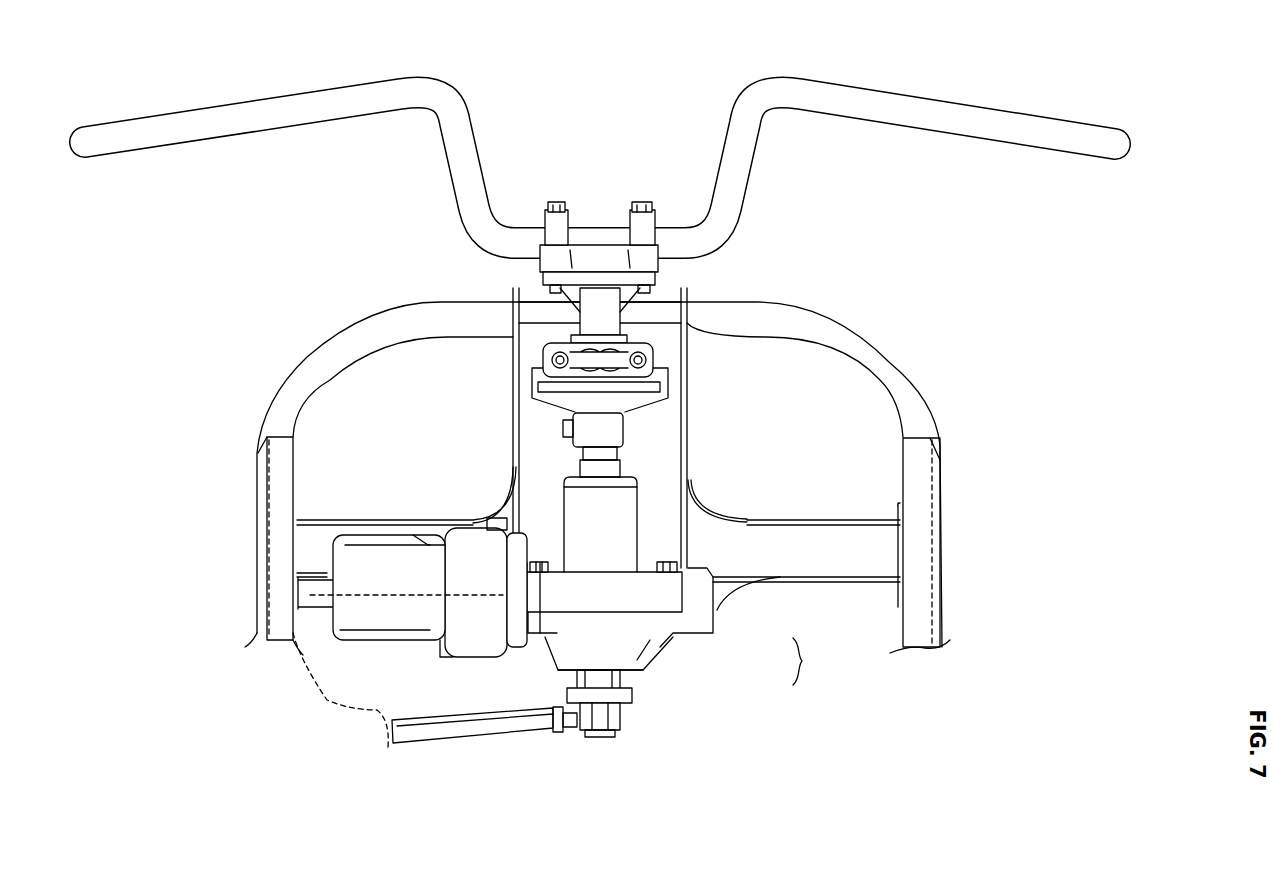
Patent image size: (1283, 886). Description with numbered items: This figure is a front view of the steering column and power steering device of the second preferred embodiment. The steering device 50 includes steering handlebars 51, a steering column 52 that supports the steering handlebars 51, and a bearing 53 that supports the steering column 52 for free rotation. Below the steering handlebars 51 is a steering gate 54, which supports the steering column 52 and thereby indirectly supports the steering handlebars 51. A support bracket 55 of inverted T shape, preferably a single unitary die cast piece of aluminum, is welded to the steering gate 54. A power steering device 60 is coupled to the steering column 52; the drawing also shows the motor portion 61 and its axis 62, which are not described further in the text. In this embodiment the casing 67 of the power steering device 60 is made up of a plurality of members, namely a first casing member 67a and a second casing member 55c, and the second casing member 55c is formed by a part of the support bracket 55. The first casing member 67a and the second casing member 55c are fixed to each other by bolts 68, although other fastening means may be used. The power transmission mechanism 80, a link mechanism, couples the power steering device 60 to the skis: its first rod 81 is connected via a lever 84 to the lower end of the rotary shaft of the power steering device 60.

The steering device 50 is at (600, 163).
The steering handlebars 51 is at (888, 105).
The steering column 52 is at (608, 320).
The bearing 53 is at (655, 360).
The steering gate 54 is at (840, 328).
The support bracket 55 is at (720, 503).
The second casing member 55c is at (650, 640).
The power steering device 60 is at (473, 557).
The electric motor 61 is at (387, 558).
The motor axis 62 is at (363, 597).
The casing 67 is at (809, 661).
The first casing member 67a is at (672, 597).
The bolts 68 is at (533, 563).
The power transmission mechanism 80 is at (442, 745).
The first rod 81 is at (523, 730).
The lever 84 is at (632, 697).